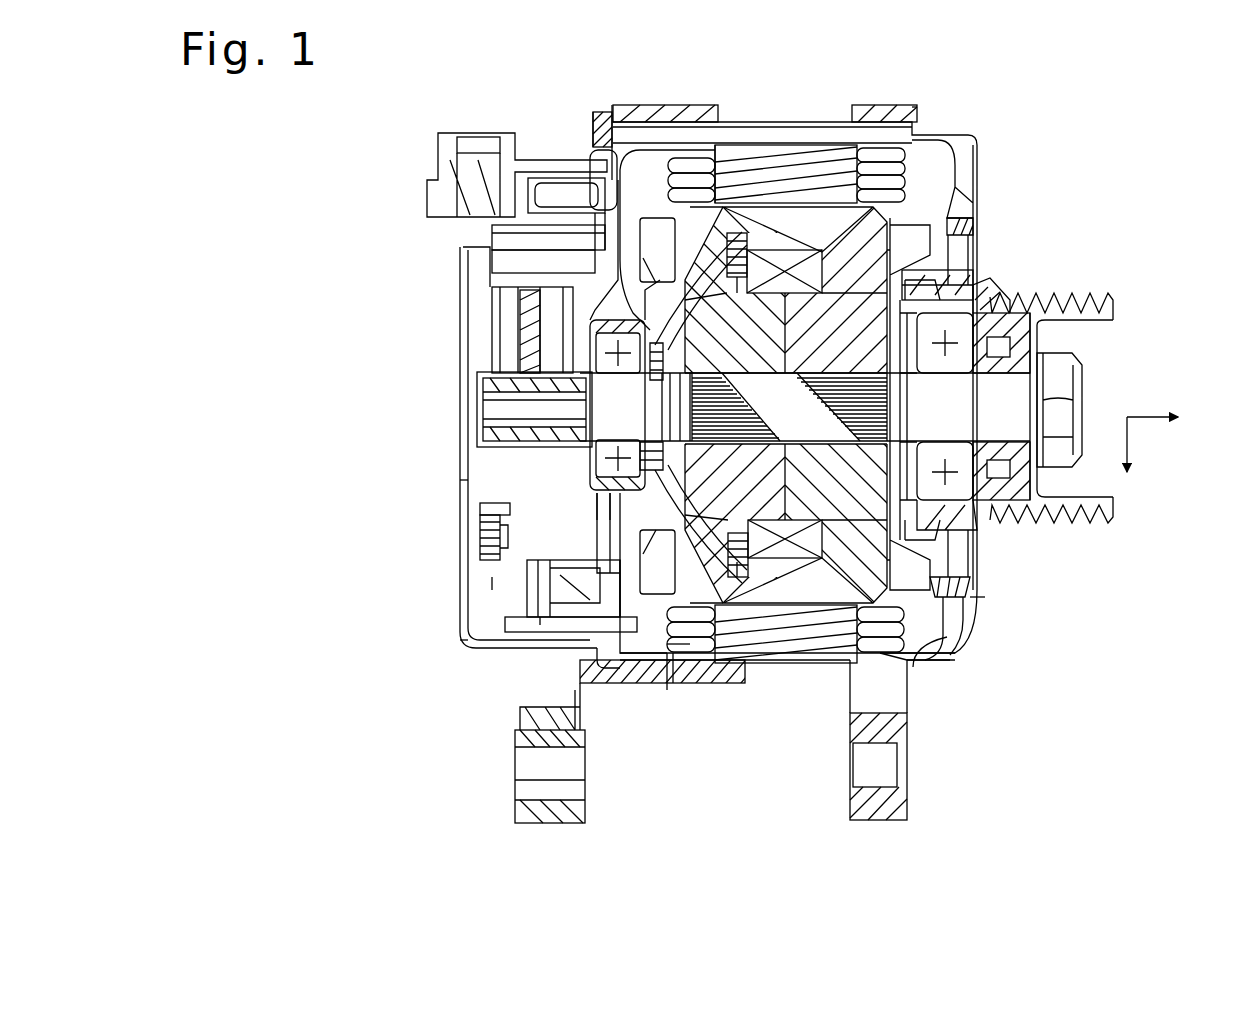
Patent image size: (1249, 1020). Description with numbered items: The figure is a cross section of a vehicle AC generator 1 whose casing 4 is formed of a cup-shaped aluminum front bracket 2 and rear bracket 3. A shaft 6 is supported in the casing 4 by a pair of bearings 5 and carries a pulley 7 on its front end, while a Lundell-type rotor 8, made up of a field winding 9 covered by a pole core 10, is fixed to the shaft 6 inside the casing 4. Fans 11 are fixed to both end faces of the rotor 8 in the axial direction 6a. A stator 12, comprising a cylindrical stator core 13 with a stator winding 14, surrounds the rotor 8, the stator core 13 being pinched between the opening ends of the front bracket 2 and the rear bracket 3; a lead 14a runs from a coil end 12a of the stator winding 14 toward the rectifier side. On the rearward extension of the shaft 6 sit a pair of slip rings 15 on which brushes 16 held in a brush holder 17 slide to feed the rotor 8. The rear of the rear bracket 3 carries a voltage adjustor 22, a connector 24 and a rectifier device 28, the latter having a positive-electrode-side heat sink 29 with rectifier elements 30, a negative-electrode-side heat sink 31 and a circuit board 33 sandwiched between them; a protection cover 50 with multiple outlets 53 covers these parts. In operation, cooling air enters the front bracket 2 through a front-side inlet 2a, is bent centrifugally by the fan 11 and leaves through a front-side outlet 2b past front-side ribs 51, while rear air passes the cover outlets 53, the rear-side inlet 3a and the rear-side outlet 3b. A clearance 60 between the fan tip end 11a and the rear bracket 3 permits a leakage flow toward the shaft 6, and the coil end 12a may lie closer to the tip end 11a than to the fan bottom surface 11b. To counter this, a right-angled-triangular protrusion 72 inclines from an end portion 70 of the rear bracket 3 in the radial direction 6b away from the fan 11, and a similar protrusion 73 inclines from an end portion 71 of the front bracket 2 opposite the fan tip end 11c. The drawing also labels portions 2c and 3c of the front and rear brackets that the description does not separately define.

The vehicle AC generator 1 is at (475, 32).
The front bracket 2 is at (973, 170).
The front-side inlet 2a is at (957, 563).
The front-side outlet 2b is at (945, 680).
The front frame flange 2c is at (957, 653).
The rear bracket 3 is at (631, 105).
The rear-side inlet 3a is at (600, 518).
The rear-side outlet 3b is at (665, 690).
The rear frame top portion 3c is at (596, 127).
The casing 4 is at (982, 134).
The bearings 5 is at (965, 325).
The shaft 6 is at (990, 408).
The axial direction 6a is at (1180, 420).
The radial direction 6b is at (1150, 472).
The pulley 7 is at (1053, 297).
The rotor 8 is at (810, 72).
The field winding 9 is at (773, 260).
The pole core 10 is at (802, 217).
The fans 11 is at (980, 218).
The tip end of fan 11a is at (667, 683).
The bottom surface of fan 11b is at (737, 683).
The tip end of fan 11c is at (930, 673).
The stator 12 is at (832, 708).
The coil end 12a is at (710, 683).
The stator core 13 is at (795, 645).
The stator winding 14 is at (870, 640).
The lead 14a is at (660, 683).
The slip rings 15 is at (487, 403).
The brushes 16 is at (490, 297).
The brush holder 17 is at (480, 307).
The voltage adjustor 22 is at (480, 237).
The connector 24 is at (438, 133).
The rectifier device 28 is at (527, 590).
The positive-electrode-side heat sink 29 is at (517, 583).
The positive-electrode-side rectifier elements 30 is at (480, 540).
The negative-electrode-side heat sink 31 is at (567, 577).
The circuit board 33 is at (613, 573).
The protection cover 50 is at (495, 580).
The front-side ribs 51 is at (997, 668).
The outlets 53 is at (457, 527).
The clearance 60 is at (547, 612).
The end portion 70 is at (460, 648).
The end portion 71 is at (947, 577).
The protrusion 72 is at (600, 570).
The protrusion 73 is at (985, 597).